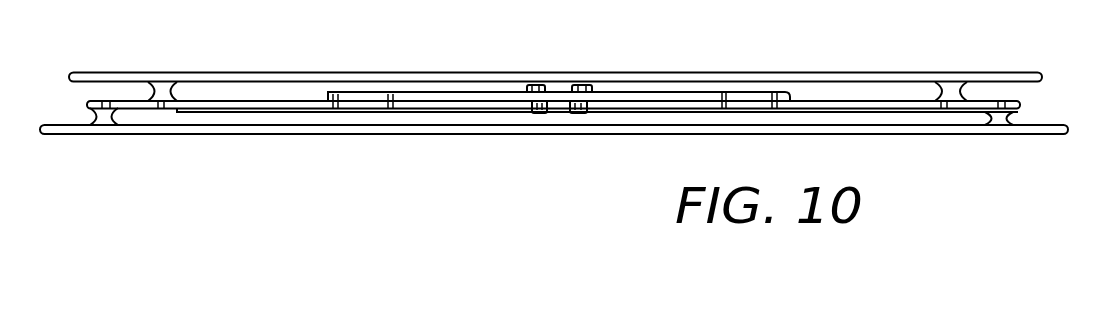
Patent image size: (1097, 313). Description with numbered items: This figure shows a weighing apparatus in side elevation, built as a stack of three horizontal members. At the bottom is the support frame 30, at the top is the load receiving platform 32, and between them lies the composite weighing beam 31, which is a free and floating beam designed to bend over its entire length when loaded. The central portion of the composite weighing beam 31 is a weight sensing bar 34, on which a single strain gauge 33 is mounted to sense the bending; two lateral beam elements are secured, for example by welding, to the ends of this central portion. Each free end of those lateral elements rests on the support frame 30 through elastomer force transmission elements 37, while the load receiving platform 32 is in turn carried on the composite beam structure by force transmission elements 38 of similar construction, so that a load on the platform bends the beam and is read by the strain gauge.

The support frame 30 is at (485, 134).
The composite weighing beam 31 is at (271, 106).
The load receiving platform 32 is at (740, 77).
The strain gauge 33 is at (553, 90).
The weight sensing bar 34 is at (417, 100).
The elastomer force transmission elements 37 is at (108, 123).
The force transmission elements 38 is at (160, 83).